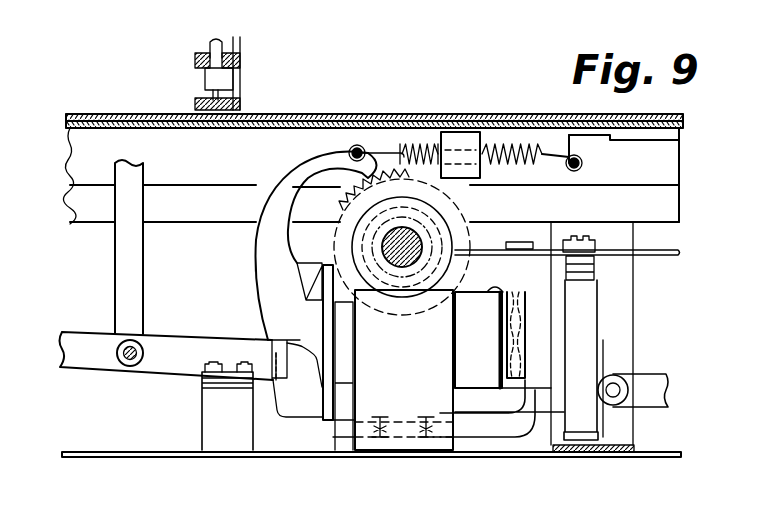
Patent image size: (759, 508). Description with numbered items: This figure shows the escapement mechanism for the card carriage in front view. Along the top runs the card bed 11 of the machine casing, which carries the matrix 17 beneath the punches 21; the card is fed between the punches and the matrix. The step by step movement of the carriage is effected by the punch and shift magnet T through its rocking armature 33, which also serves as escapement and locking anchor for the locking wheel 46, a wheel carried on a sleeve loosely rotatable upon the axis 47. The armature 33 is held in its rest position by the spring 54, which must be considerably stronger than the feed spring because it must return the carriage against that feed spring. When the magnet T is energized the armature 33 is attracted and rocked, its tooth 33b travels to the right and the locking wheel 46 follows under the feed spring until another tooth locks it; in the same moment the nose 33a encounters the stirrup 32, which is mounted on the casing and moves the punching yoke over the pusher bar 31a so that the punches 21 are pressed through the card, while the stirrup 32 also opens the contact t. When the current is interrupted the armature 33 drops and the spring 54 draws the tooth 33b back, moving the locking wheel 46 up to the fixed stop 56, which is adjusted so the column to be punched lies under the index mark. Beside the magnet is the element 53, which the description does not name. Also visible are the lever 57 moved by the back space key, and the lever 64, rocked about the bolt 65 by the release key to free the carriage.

The matrix 17 is at (110, 116).
The punches 21 is at (208, 82).
The card bed 11 is at (84, 129).
The pusher bar 31a is at (130, 262).
The stirrup 32 is at (174, 356).
The armature 33 is at (295, 187).
The nose 33a is at (282, 318).
The tooth 33b is at (353, 148).
The locking wheel 46 is at (388, 187).
The axis 47 is at (406, 240).
The fixed stop 56 is at (466, 140).
The spring 54 is at (521, 147).
The punch and shift magnet T is at (481, 367).
The contact t is at (223, 397).
The drive belt 53 is at (520, 376).
The lever 57 is at (654, 390).
The lever 64 is at (664, 258).
The bolt 65 is at (603, 258).